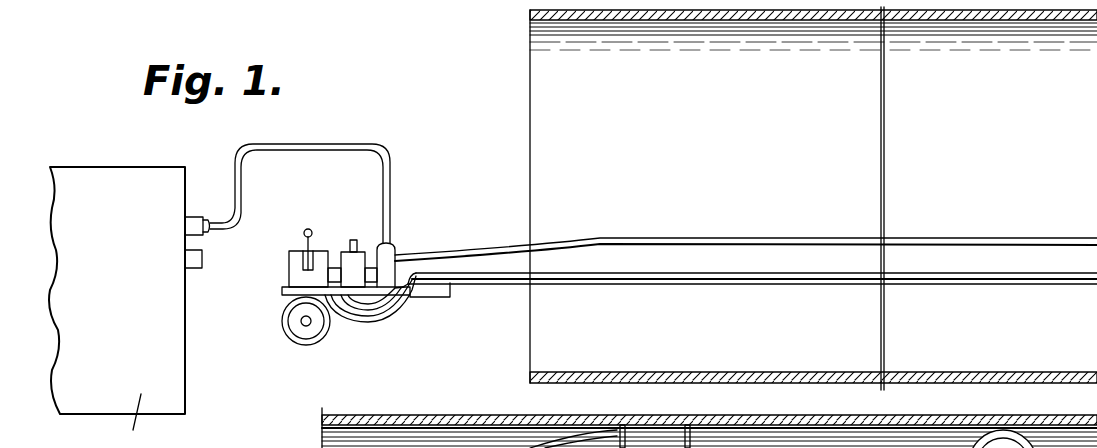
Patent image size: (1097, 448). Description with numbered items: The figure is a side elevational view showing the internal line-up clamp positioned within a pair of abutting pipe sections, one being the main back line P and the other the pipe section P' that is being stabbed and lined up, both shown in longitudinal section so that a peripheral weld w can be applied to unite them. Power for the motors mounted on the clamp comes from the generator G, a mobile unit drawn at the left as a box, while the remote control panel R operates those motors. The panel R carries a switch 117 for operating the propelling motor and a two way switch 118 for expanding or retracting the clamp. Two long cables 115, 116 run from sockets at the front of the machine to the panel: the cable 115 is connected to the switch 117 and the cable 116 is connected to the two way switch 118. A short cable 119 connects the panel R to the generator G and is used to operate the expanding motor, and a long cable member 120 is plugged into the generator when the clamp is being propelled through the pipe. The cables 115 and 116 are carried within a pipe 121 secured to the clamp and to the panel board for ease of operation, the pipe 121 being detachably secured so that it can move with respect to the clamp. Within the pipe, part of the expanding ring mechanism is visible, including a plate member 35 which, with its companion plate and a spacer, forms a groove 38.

The generator G is at (122, 167).
The remote control panel R is at (276, 294).
The cable 115 is at (375, 300).
The cable 116 is at (358, 315).
The switch 117 is at (359, 251).
The two way switch 118 is at (291, 258).
The short cable 119 is at (330, 146).
The long cable member 120 is at (896, 238).
The pipe 121 is at (873, 286).
The pipe section P is at (709, 420).
The pipe section P' is at (763, 212).
The weld w is at (659, 440).
The groove 38 is at (676, 430).
The plate member 35 is at (659, 442).